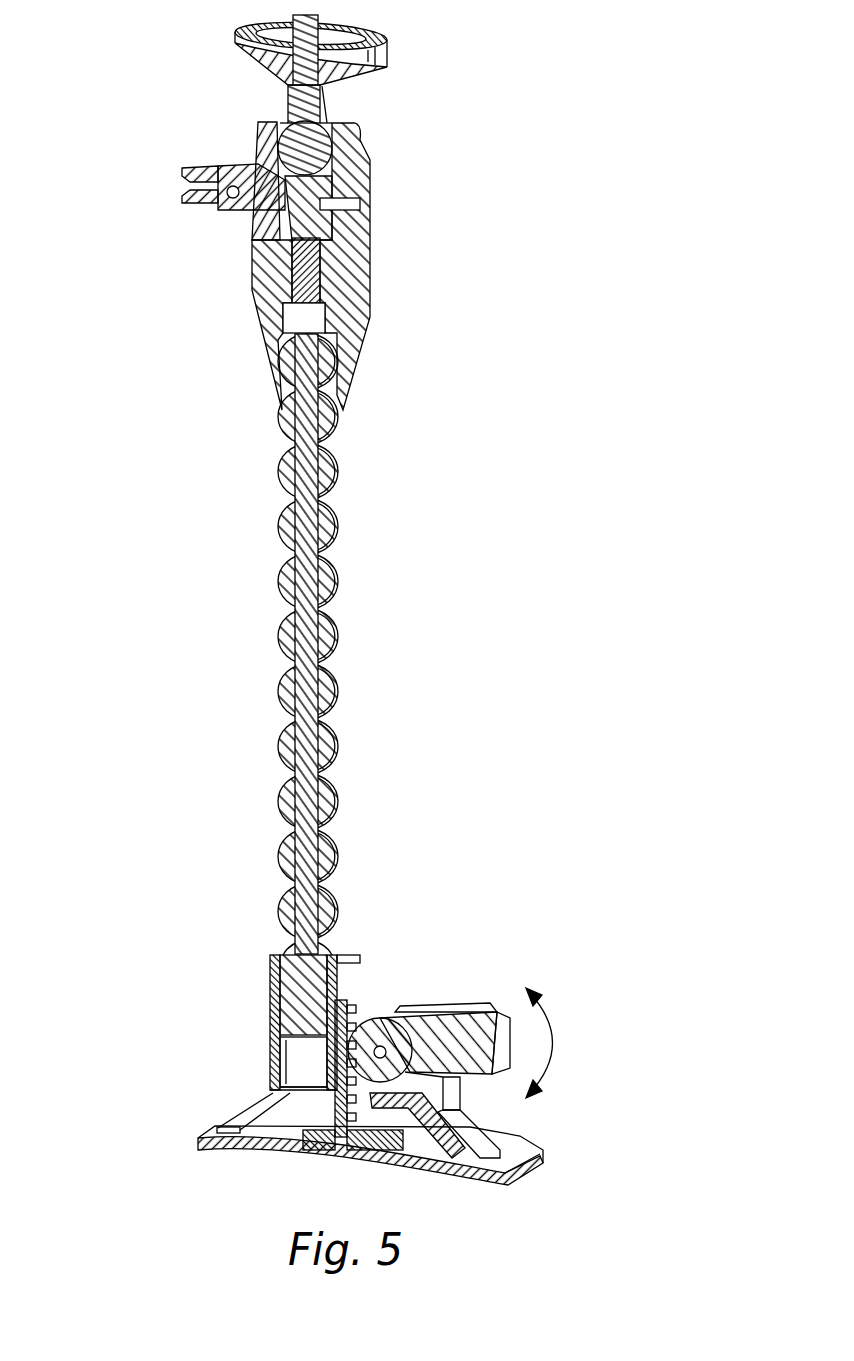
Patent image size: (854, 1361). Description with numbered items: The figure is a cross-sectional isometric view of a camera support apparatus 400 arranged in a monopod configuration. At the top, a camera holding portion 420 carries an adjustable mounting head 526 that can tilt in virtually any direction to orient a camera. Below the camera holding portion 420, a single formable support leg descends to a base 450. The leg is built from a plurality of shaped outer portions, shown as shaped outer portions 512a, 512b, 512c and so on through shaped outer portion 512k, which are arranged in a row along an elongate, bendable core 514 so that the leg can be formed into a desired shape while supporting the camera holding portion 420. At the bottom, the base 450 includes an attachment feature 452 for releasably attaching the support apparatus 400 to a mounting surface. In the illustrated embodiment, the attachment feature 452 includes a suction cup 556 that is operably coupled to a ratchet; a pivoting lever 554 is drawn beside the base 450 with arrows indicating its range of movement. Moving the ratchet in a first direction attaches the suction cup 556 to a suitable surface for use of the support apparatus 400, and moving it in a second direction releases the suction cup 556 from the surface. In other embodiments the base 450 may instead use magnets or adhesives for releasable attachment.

The camera support apparatus 400 is at (613, 358).
The camera holding portion 420 is at (444, 48).
The adjustable mounting head 526 is at (235, 45).
The shaped outer portion 512a is at (330, 392).
The shaped outer portion 512b is at (337, 428).
The shaped outer portion 512c is at (337, 480).
The shaped outer portion 512k is at (330, 910).
The core 514 is at (328, 693).
The base 450 is at (179, 1080).
The attachment feature 452 is at (460, 1182).
The locking lever 554 is at (497, 1003).
The suction cup 556 is at (345, 1157).